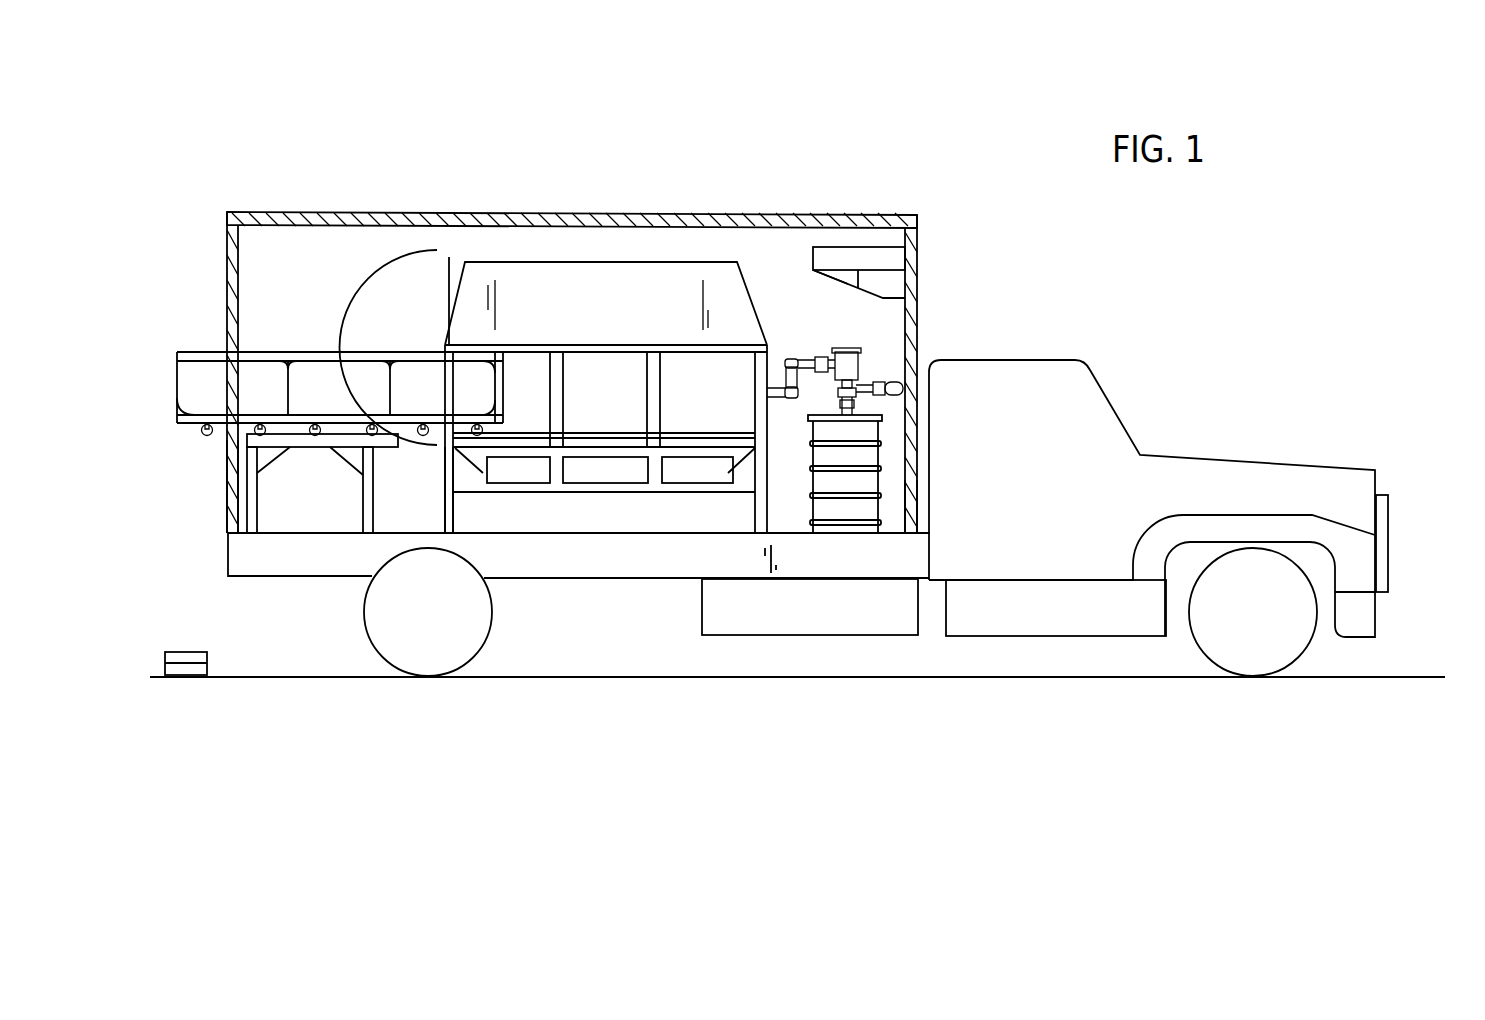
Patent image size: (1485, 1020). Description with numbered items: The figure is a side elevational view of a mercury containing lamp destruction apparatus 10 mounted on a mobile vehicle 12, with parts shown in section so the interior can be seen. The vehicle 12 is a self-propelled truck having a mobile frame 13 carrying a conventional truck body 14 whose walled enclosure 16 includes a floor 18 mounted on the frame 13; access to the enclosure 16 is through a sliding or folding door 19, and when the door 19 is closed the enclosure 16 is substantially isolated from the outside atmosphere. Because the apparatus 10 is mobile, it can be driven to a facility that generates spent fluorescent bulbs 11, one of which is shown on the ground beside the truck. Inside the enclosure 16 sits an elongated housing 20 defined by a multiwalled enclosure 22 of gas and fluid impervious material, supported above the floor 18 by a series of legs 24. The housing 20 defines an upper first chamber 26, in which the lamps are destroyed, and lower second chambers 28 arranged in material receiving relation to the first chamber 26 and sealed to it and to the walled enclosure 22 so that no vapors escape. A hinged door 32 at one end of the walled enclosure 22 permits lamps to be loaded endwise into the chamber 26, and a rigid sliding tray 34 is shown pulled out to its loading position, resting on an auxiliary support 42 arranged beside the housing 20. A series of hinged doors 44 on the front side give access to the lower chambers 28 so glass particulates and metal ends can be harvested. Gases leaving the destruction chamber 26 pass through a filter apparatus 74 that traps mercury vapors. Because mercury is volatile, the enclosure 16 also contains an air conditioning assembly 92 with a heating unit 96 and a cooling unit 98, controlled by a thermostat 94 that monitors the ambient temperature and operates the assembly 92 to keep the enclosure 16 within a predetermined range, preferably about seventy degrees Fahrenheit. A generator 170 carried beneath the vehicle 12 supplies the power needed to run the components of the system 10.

The lamp destruction apparatus 10 is at (584, 187).
The fluorescent bulbs 11 is at (208, 660).
The mobile vehicle 12 is at (1198, 453).
The mobile frame 13 is at (624, 563).
The truck body 14 is at (913, 496).
The walled enclosure 16 is at (288, 198).
The floor 18 is at (295, 532).
The door 19 is at (228, 480).
The elongated housing 20 is at (588, 382).
The multiwalled enclosure 22 is at (587, 315).
The legs 24 is at (453, 510).
The first chamber 26 is at (757, 398).
The second chamber 28 is at (740, 489).
The hinged door 32 is at (448, 285).
The tray 34 is at (270, 347).
The auxiliary support 42 is at (363, 507).
The hinged doors 44 is at (543, 483).
The filter apparatus 74 is at (803, 489).
The air conditioning assembly 92 is at (901, 253).
The thermostat 94 is at (828, 272).
The heating unit 96 is at (892, 258).
The cooling unit 98 is at (893, 287).
The generator 170 is at (803, 619).